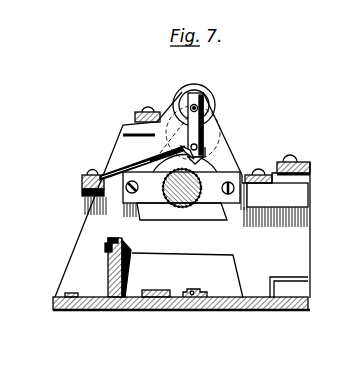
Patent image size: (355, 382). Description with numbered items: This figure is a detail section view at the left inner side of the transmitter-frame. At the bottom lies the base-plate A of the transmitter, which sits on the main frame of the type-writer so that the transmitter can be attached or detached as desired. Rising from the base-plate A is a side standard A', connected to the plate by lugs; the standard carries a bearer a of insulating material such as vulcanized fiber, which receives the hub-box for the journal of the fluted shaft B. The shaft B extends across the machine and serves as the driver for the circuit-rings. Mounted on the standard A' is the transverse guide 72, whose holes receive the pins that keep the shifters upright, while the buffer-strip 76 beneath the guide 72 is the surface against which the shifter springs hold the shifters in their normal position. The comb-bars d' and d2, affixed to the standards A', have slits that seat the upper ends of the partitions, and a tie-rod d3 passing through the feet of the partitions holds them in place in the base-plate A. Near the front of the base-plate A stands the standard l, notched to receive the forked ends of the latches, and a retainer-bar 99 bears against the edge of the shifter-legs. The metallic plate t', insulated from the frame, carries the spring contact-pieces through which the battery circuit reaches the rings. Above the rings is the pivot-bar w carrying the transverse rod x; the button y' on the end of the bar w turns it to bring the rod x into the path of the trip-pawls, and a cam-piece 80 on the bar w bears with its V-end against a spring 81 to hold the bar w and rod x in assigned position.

The base-plate A is at (181, 317).
The side standard A' is at (182, 195).
The fluted shaft B is at (178, 207).
The bearer a is at (181, 196).
The standard l is at (106, 273).
The transverse rod x is at (200, 150).
The pivot-bar w is at (205, 102).
The button y' is at (209, 95).
The comb-bar d' is at (146, 105).
The comb-bar d2 is at (266, 173).
The tie-rod d3 is at (191, 301).
The metallic plate t' is at (296, 148).
The transverse guide 72 is at (82, 181).
The buffer-strip 76 is at (82, 193).
The cam-piece 80 is at (206, 155).
The spring 81 is at (151, 161).
The retainer-bar 99 is at (72, 293).